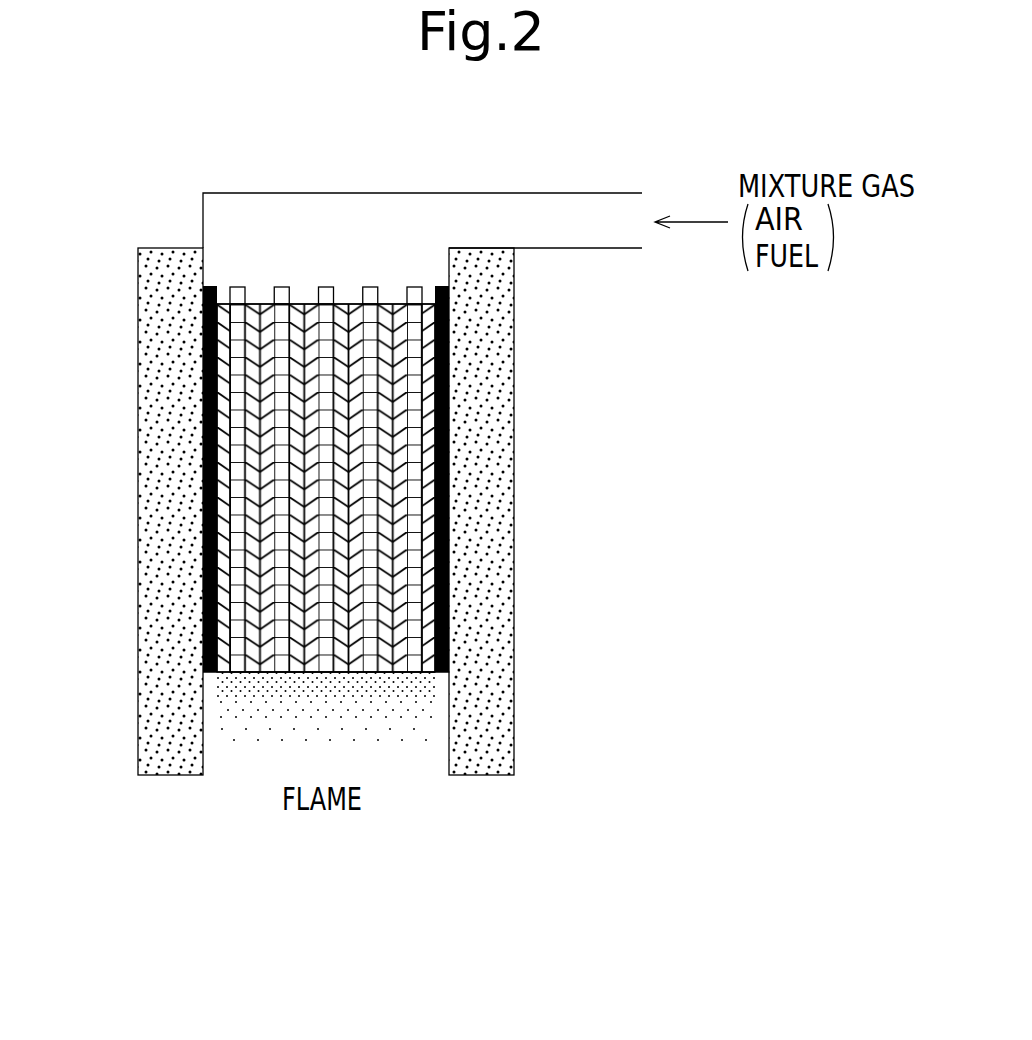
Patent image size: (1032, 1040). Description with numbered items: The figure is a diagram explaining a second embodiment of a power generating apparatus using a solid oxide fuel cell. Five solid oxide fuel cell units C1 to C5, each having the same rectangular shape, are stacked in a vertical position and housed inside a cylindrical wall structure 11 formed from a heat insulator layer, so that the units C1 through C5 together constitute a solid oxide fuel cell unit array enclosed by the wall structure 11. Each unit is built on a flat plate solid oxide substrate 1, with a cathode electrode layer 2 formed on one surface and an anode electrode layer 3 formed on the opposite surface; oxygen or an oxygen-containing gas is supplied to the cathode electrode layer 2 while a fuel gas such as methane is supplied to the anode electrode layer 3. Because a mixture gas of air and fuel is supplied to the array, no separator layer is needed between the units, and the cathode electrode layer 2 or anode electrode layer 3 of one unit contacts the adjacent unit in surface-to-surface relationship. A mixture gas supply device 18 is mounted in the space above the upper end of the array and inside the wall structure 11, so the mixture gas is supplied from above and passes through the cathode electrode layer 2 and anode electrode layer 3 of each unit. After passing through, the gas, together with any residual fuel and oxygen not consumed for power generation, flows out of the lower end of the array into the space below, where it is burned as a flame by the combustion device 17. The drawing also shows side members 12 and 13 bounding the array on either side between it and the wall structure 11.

The flat plate solid oxide substrate 1 is at (240, 425).
The cathode electrode layer 2 is at (235, 400).
The anode electrode layer 3 is at (205, 435).
The wall structure 11 is at (505, 668).
The left side plate 12 is at (203, 590).
The right side plate 13 is at (450, 530).
The combustion device 17 is at (428, 790).
The mixture gas supply device 18 is at (427, 207).
The solid oxide fuel cell unit C1 is at (80, 366).
The solid oxide fuel cell unit C5 is at (605, 318).